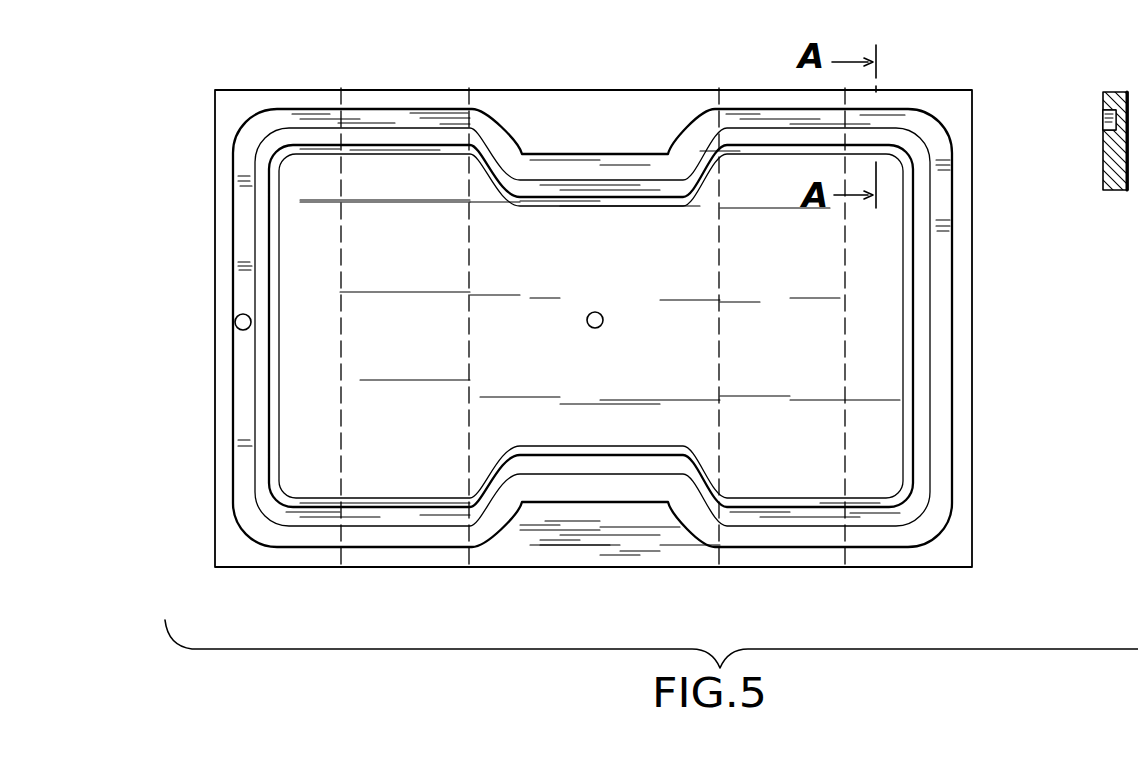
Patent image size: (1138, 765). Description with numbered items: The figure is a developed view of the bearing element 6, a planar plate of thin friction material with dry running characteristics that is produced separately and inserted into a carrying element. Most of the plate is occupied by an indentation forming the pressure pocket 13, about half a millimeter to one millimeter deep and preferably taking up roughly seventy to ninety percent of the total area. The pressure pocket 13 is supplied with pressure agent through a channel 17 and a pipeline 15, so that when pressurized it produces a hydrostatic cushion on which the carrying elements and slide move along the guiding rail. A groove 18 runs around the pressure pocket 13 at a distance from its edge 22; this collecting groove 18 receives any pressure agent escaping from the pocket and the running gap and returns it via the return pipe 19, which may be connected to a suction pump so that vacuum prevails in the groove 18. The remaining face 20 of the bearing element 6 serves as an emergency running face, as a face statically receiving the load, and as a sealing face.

The bearing element 6 is at (755, 101).
The pressure pocket 13 is at (862, 333).
The pipeline 15 is at (595, 320).
The channel 17 is at (588, 314).
The groove 18 is at (242, 455).
The return pipe 19 is at (235, 322).
The face 20 is at (543, 546).
The edge 22 is at (317, 503).